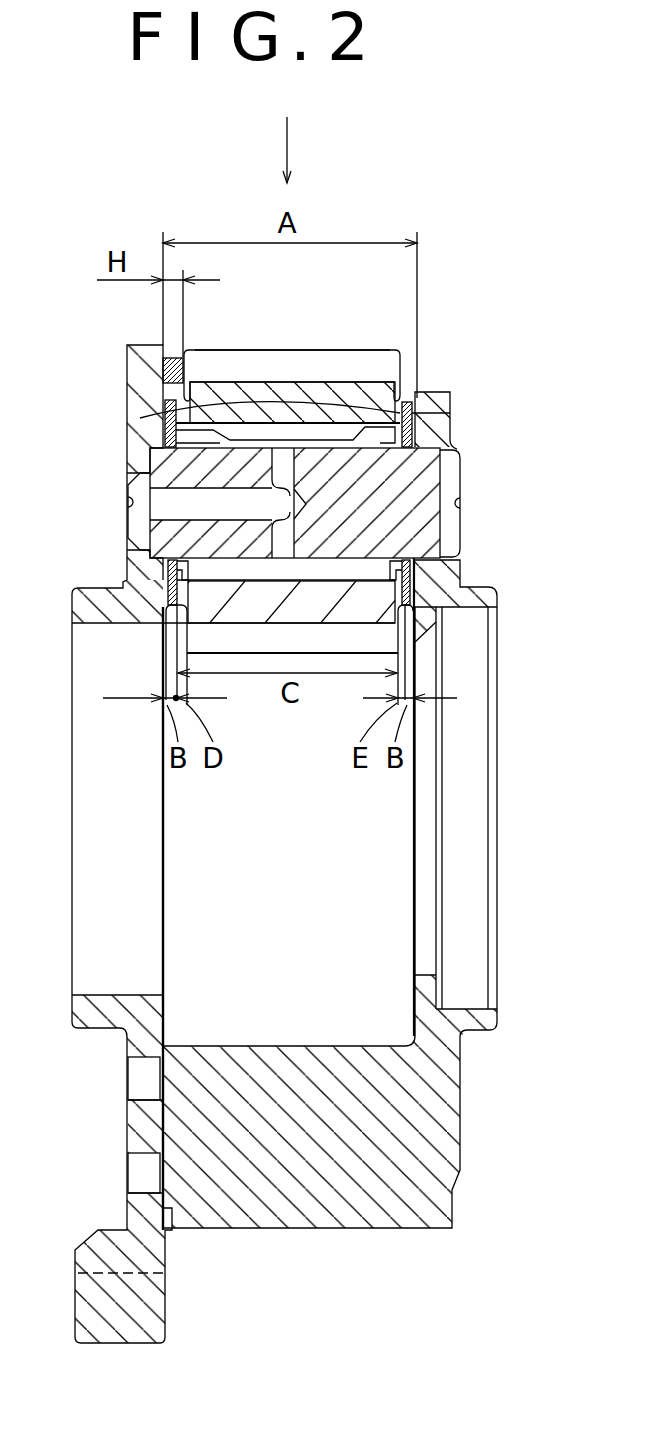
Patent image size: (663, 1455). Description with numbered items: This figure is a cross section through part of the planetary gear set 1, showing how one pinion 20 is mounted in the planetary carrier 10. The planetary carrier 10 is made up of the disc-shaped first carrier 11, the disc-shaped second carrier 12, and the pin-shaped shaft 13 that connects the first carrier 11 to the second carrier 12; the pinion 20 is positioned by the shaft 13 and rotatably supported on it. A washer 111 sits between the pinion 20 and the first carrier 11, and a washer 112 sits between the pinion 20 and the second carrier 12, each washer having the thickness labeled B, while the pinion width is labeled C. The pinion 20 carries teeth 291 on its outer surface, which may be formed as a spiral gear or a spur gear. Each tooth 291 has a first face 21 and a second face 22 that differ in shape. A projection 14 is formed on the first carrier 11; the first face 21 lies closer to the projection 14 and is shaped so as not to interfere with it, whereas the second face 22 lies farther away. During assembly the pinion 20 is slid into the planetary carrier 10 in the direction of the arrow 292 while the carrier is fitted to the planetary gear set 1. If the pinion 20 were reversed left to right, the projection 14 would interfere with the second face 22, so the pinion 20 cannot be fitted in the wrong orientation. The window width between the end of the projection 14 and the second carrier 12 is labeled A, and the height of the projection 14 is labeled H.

The planetary gear set 1 is at (485, 336).
The planetary carrier 10 is at (525, 387).
The first carrier 11 is at (450, 413).
The second carrier 12 is at (438, 427).
The shaft 13 is at (430, 481).
The projection 14 is at (163, 372).
The pinion 20 is at (268, 343).
The first face 21 is at (187, 357).
The second face 22 is at (400, 356).
The teeth 291 is at (337, 350).
The arrow 292 is at (287, 135).
The washer 111 is at (165, 585).
The washer 112 is at (412, 580).